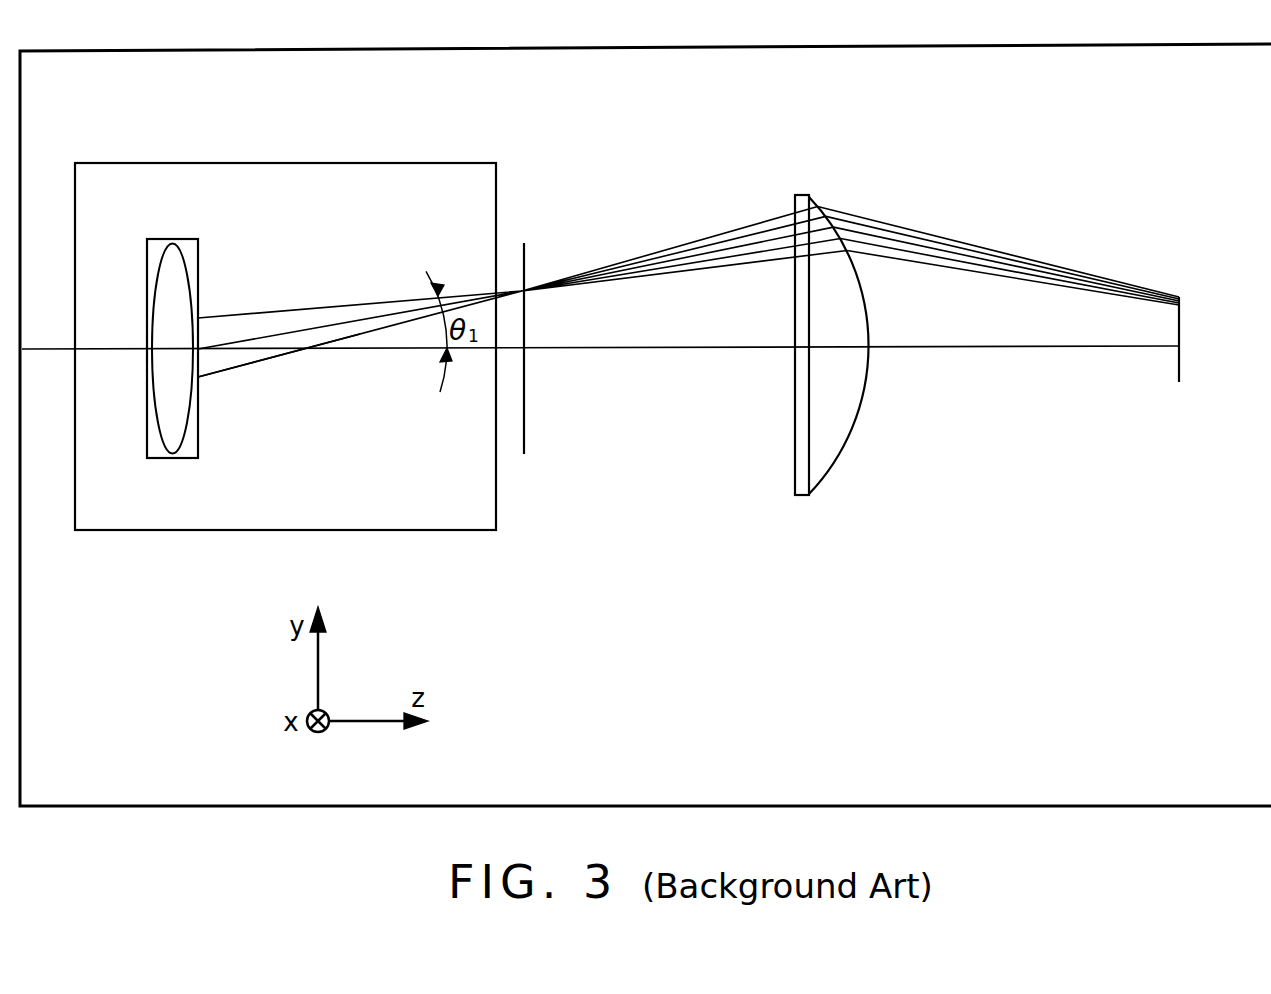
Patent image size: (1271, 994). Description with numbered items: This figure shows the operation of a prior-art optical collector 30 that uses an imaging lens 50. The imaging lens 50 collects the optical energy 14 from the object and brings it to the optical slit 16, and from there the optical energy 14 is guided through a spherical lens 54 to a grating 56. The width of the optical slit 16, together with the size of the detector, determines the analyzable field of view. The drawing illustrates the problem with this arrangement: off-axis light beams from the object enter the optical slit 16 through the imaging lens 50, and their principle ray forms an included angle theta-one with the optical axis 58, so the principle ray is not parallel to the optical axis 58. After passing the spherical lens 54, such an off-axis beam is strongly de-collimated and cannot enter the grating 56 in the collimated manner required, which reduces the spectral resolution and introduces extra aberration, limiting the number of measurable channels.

The optical collector 30 is at (285, 163).
The imaging lens 50 is at (185, 239).
The optical energy 14 is at (340, 304).
The optical axis 58 is at (337, 352).
The optical slit 16 is at (524, 438).
The spherical lens 54 is at (852, 437).
The grating 56 is at (1178, 367).